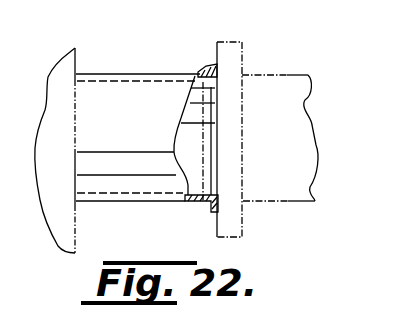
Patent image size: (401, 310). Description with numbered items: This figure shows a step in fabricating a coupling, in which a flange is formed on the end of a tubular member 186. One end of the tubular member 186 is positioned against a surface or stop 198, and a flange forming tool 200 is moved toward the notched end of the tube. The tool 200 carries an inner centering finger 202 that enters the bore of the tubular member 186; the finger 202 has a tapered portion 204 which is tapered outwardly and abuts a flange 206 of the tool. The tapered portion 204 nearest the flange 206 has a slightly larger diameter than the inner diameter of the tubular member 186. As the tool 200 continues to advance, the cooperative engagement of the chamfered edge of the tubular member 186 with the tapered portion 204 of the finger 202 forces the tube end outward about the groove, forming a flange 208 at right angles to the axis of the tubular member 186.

The stop 198 is at (62, 75).
The tubular member 186 is at (127, 73).
The inner centering finger 202 is at (205, 162).
The flange 208 is at (206, 69).
The tapered portion 204 is at (202, 201).
The flange 206 is at (243, 206).
The flange forming tool 200 is at (283, 83).